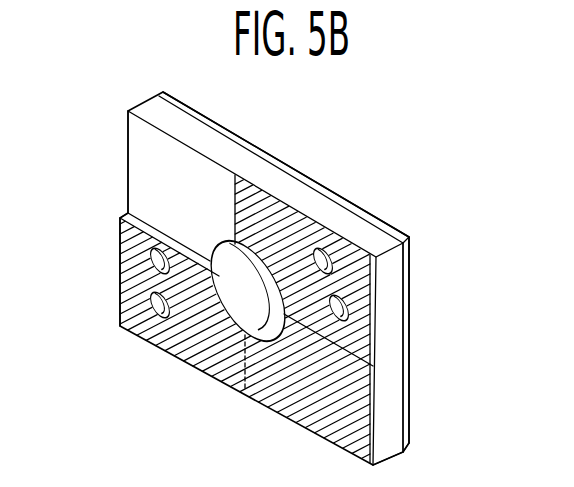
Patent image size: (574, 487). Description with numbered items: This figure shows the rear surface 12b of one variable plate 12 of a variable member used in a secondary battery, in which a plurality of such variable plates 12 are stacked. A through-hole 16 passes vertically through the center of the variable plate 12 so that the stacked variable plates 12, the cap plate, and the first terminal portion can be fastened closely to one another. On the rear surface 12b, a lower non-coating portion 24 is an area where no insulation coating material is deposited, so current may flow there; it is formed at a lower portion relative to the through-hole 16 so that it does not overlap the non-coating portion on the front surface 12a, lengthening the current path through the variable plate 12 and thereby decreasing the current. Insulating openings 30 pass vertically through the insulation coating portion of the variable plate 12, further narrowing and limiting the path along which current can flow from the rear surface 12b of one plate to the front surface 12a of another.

The variable plate 12 is at (123, 86).
The front surface 12a is at (200, 113).
The rear surface 12b is at (120, 247).
The lower non-coating portion 24 is at (160, 197).
The through-hole 16 is at (250, 301).
The insulating opening 30 is at (150, 308).